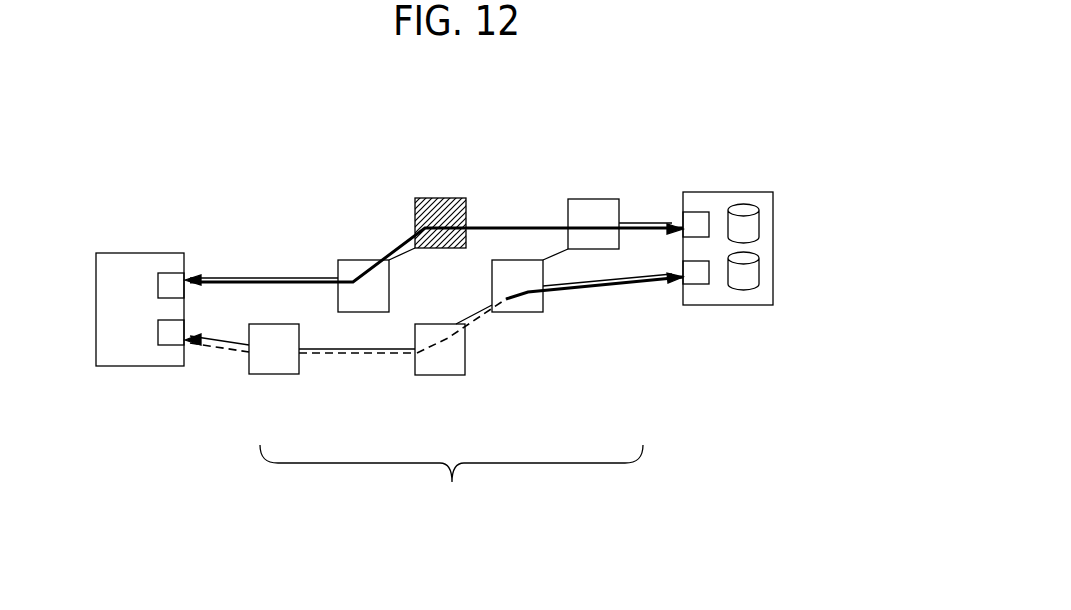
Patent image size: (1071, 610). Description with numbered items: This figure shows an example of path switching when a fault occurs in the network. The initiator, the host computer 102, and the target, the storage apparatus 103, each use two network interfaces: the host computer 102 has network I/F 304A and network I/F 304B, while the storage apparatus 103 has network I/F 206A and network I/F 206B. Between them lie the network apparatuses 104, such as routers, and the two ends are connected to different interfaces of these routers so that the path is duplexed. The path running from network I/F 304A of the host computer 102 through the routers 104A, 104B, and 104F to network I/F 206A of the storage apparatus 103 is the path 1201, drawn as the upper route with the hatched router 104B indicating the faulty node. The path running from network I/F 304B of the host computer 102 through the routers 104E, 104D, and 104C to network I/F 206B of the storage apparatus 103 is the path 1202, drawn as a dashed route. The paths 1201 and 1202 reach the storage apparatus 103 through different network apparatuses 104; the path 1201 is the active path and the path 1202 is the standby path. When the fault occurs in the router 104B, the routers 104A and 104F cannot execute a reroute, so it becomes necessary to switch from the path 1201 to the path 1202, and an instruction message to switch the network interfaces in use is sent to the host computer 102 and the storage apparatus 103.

The host computer 102 is at (115, 253).
The storage apparatus 103 is at (748, 192).
The network apparatuses 104 is at (451, 491).
The router 104A is at (362, 260).
The router 104B is at (438, 197).
The router 104C is at (518, 312).
The router 104D is at (440, 375).
The router 104E is at (273, 375).
The router 104F is at (590, 199).
The network I/F 206A is at (694, 212).
The network I/F 206B is at (697, 284).
The network I/F 304A is at (177, 273).
The network I/F 304B is at (170, 345).
The path 1201 is at (511, 228).
The path 1202 is at (363, 355).